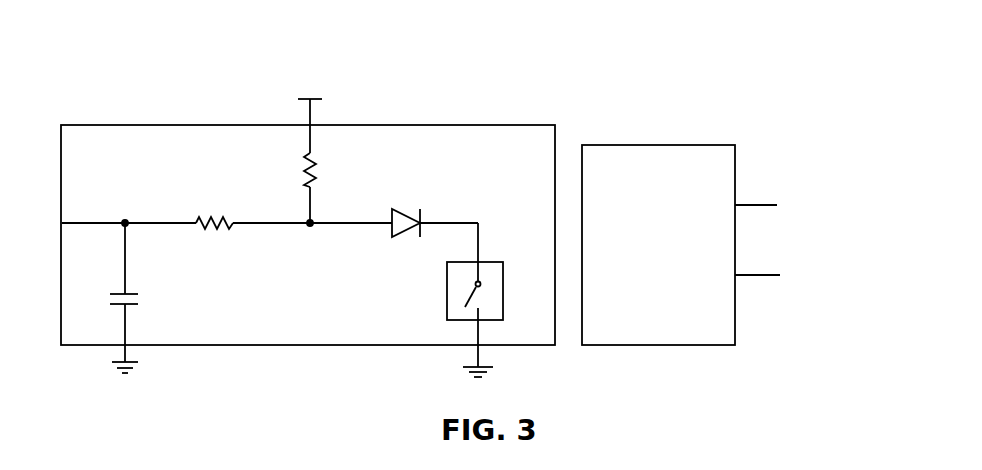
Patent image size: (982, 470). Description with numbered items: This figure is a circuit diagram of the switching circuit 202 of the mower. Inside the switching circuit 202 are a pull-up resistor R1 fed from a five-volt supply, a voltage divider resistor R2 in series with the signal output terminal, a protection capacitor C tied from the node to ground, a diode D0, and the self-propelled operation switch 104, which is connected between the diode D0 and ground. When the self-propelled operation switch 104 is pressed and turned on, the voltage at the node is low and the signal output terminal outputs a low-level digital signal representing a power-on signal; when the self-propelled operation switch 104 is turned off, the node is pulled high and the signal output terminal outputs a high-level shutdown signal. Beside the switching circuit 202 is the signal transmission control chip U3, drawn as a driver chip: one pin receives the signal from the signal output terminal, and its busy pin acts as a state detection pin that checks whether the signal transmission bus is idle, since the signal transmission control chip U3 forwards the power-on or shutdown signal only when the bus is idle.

The switching circuit 202 is at (308, 223).
The self-propelled operation switch 104 is at (533, 277).
The pull-up resistor R1 is at (330, 170).
The voltage divider resistor R2 is at (215, 208).
The protection capacitor C is at (137, 298).
The diode D0 is at (406, 207).
The signal transmission control chip U3 is at (743, 231).